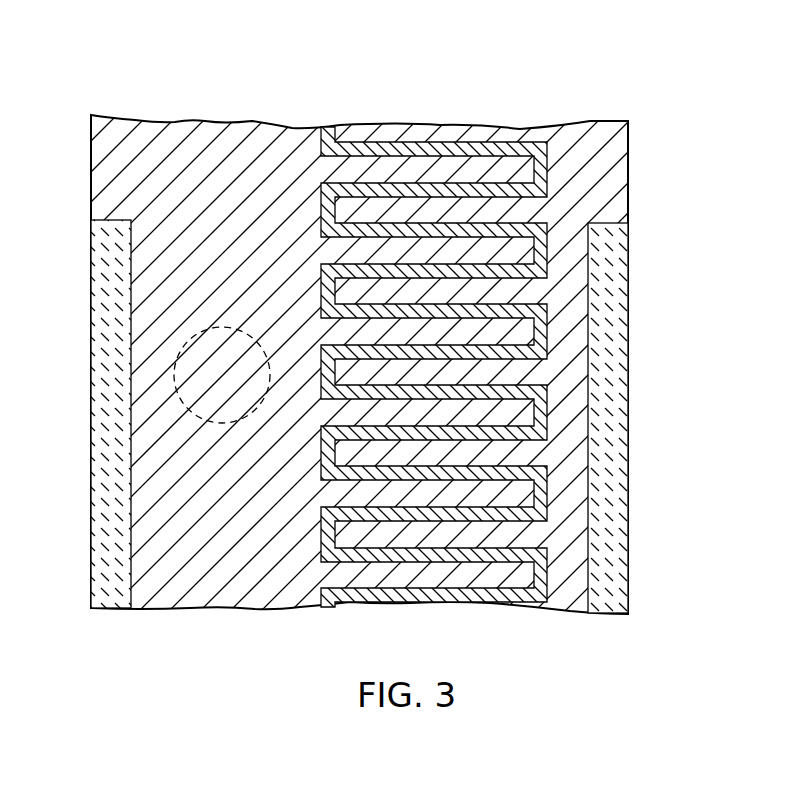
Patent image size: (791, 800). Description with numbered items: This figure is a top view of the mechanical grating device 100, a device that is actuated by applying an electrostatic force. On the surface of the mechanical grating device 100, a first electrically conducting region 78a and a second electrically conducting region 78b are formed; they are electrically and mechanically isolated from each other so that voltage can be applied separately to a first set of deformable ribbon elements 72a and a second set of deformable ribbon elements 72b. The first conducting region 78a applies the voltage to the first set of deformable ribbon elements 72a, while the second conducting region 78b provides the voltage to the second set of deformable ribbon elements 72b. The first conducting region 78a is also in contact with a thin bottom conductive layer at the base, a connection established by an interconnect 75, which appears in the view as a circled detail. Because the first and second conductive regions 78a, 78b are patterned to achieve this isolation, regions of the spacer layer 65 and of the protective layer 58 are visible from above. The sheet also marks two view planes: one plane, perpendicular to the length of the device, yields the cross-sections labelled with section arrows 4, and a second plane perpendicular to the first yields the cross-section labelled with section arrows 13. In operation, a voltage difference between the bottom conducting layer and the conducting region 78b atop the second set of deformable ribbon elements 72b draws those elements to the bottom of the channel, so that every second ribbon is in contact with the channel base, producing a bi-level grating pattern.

The mechanical grating device 100 is at (633, 93).
The protective layer 58 is at (490, 333).
The spacer layer 65 is at (108, 508).
The first set of deformable ribbon elements 72a is at (437, 243).
The second set of deformable ribbon elements 72b is at (392, 283).
The interconnect 75 is at (190, 399).
The first electrically conducting region 78a is at (288, 590).
The second electrically conducting region 78b is at (567, 588).
The section line 13- 13 is at (423, 165).
The section line 4- 4 is at (145, 370).